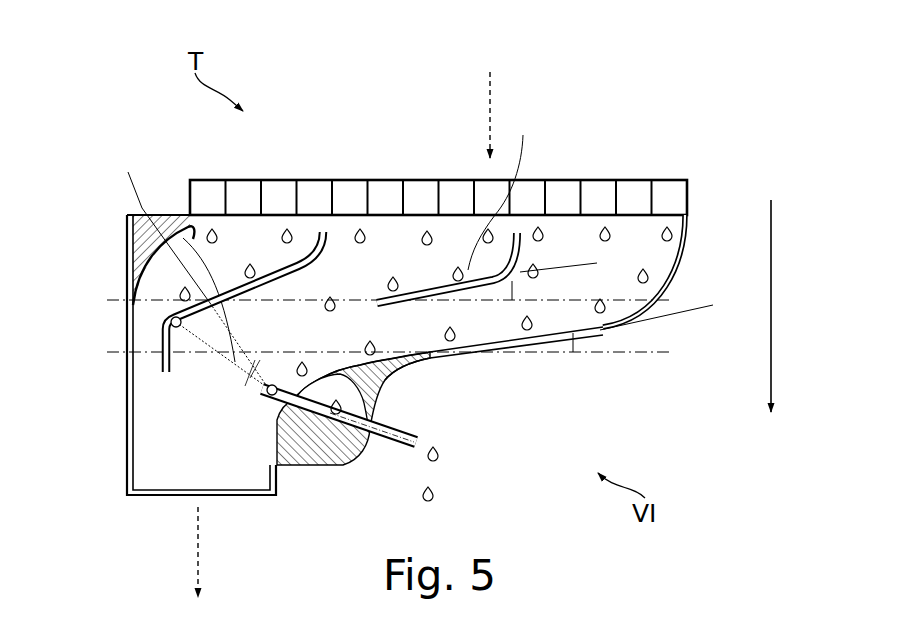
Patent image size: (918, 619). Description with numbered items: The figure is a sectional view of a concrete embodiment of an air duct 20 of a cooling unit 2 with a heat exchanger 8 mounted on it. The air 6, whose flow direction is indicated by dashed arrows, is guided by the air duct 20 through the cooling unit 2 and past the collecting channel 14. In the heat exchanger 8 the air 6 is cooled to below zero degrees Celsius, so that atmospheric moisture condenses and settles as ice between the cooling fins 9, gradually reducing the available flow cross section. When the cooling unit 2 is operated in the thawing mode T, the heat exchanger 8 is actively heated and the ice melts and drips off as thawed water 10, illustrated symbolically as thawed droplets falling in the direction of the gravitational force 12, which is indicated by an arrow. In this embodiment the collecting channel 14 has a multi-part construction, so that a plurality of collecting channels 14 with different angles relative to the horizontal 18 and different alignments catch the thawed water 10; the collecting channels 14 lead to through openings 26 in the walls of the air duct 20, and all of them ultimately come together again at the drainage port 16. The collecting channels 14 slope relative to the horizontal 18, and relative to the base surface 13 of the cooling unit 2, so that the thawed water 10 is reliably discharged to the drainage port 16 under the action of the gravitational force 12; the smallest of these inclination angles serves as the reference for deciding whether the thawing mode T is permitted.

The cooling unit 2 is at (142, 112).
The air 6 is at (495, 92).
The heat exchanger 8 is at (689, 200).
The cooling fins 9 is at (588, 194).
The thawed water 10 is at (358, 228).
The gravitational force 12 is at (777, 372).
The base surface 13 is at (158, 214).
The collecting channel 14 is at (510, 416).
The drainage port 16 is at (372, 450).
The horizontal 18 is at (124, 299).
The air duct 20 is at (123, 440).
The through openings 26 is at (157, 354).